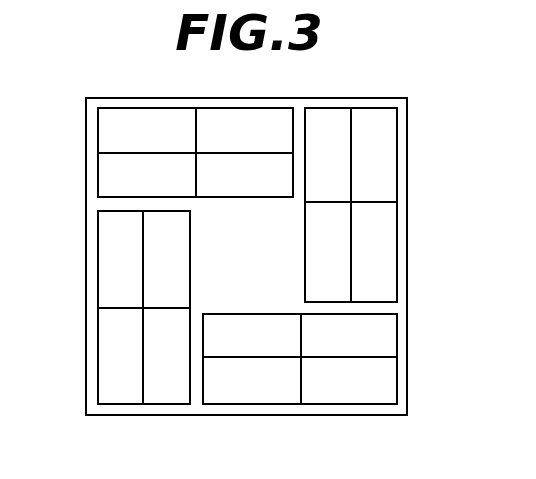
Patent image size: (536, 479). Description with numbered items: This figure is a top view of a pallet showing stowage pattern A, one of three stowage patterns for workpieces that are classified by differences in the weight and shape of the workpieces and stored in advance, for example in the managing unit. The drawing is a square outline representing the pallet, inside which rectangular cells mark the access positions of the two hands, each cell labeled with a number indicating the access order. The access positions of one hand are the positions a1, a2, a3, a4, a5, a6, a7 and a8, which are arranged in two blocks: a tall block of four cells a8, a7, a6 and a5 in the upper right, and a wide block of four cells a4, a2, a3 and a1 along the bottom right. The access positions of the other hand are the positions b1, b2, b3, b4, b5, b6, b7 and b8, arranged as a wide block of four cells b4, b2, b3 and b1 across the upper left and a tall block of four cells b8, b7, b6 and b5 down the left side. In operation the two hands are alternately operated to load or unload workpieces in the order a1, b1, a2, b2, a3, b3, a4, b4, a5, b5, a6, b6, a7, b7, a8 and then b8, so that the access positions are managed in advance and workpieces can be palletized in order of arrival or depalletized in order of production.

The access position a1 is at (349, 380).
The access position a2 is at (349, 335).
The access position a3 is at (252, 380).
The access position a4 is at (252, 335).
The access position a5 is at (374, 252).
The access position a6 is at (328, 252).
The access position a7 is at (374, 155).
The access position a8 is at (328, 155).
The access position b1 is at (244, 175).
The access position b2 is at (244, 130).
The access position b3 is at (147, 175).
The access position b4 is at (147, 130).
The access position b5 is at (166, 356).
The access position b6 is at (120, 356).
The access position b7 is at (166, 259).
The access position b8 is at (120, 259).